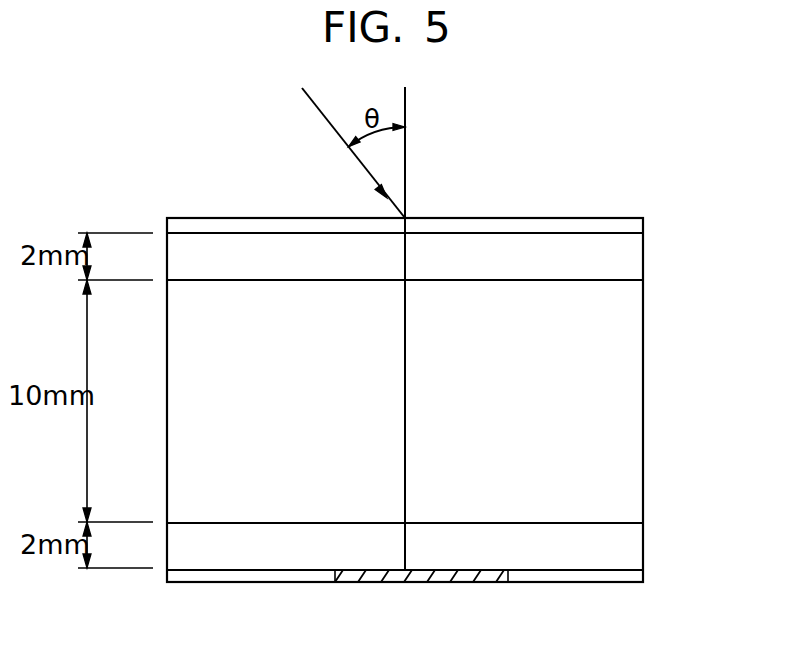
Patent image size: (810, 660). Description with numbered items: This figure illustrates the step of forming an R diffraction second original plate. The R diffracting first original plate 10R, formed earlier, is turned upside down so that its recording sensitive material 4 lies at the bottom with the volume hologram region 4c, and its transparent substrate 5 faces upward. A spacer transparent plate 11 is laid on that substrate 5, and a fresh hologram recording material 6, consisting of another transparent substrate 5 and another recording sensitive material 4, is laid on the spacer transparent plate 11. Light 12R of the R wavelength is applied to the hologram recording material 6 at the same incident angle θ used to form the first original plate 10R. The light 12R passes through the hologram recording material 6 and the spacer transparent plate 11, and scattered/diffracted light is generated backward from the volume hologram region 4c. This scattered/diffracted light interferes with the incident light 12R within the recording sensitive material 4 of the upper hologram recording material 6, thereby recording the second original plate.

The recording sensitive material 4 is at (636, 230).
The transparent substrate 5 is at (636, 268).
The hologram recording material 6 is at (708, 205).
The R diffracting first original plate 10R is at (708, 515).
The spacer transparent plate 11 is at (636, 407).
The light of the R wavelength 12R is at (300, 90).
The volume hologram region 4c is at (476, 576).